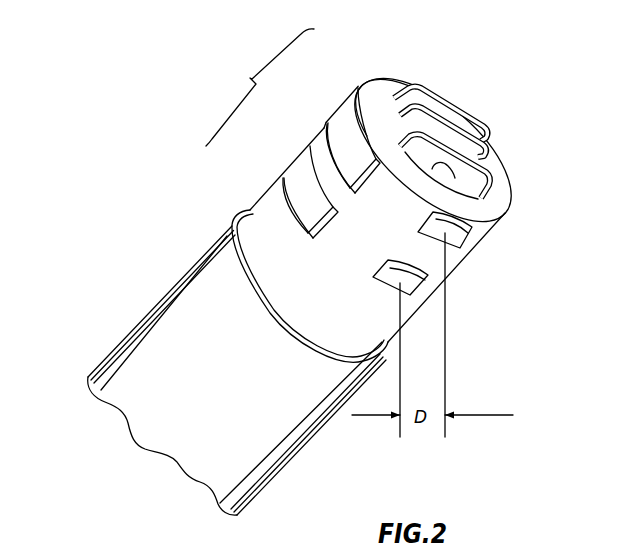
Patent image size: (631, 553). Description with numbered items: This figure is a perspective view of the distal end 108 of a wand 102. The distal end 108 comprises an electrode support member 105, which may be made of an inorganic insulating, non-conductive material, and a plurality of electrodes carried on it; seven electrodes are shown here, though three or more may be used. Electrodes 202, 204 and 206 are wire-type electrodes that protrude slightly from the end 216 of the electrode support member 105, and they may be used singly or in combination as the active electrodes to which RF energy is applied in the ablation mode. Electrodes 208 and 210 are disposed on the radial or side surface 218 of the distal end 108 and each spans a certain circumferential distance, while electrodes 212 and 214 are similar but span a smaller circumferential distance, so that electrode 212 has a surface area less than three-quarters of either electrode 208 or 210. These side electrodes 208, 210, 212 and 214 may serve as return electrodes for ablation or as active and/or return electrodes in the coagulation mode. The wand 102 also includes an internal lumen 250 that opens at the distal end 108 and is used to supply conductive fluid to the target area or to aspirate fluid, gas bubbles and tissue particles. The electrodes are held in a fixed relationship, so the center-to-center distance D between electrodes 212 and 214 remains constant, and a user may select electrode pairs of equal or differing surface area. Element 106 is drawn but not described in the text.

The wand 102 is at (97, 128).
The electrode support member 105 is at (263, 198).
The cable body 106 is at (157, 295).
The distal end 108 is at (250, 80).
The electrode 202 is at (488, 130).
The electrode 204 is at (490, 148).
The electrode 206 is at (495, 182).
The electrode 208 is at (297, 158).
The electrode 210 is at (343, 110).
The electrode 212 is at (457, 238).
The electrode 214 is at (388, 281).
The end 216 is at (387, 85).
The radial or side surface 218 is at (286, 260).
The internal lumen 250 is at (452, 172).